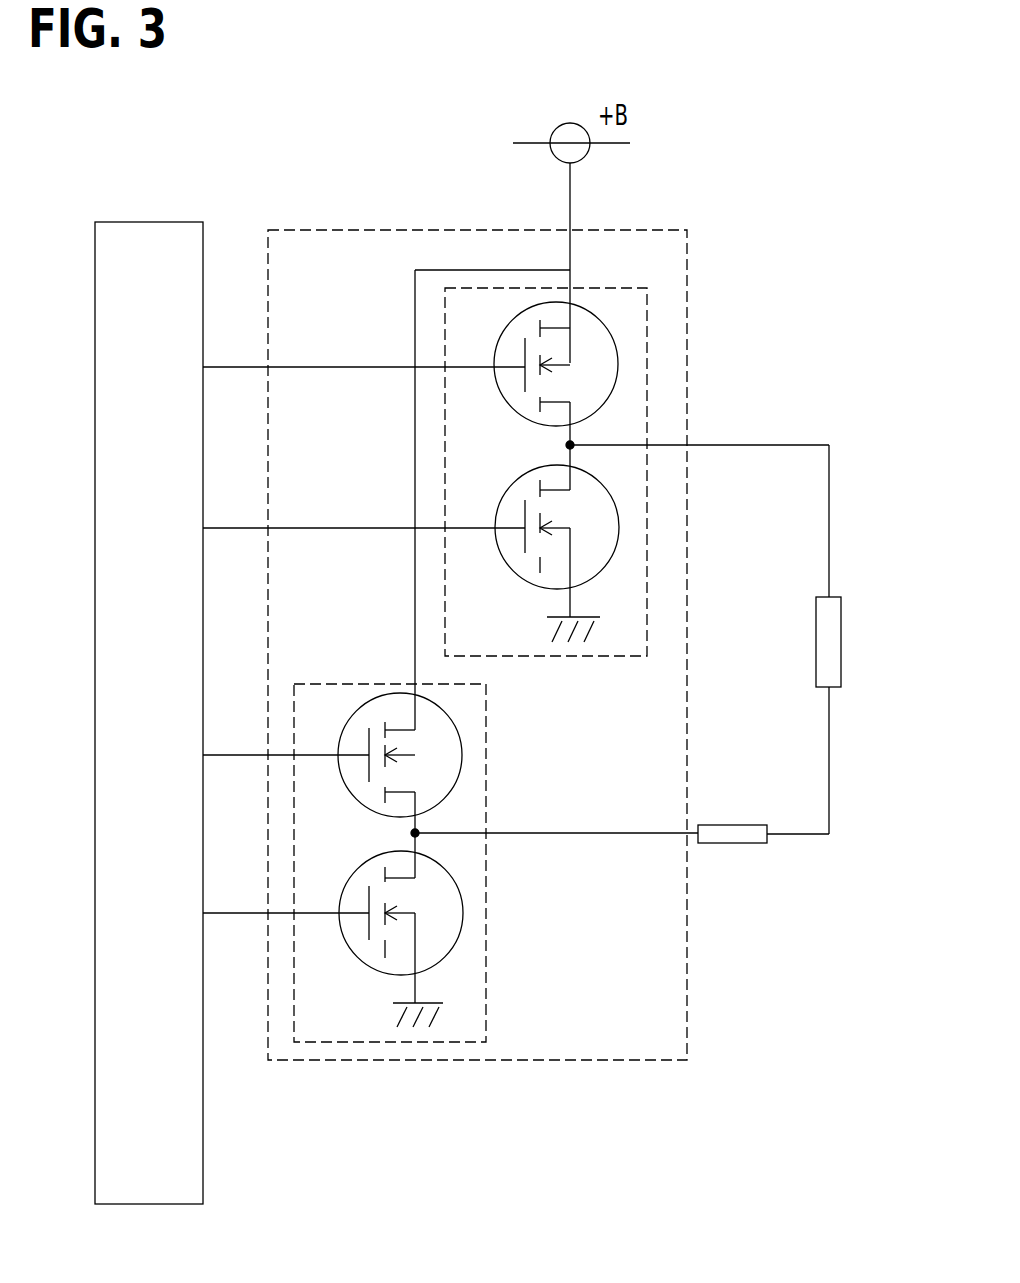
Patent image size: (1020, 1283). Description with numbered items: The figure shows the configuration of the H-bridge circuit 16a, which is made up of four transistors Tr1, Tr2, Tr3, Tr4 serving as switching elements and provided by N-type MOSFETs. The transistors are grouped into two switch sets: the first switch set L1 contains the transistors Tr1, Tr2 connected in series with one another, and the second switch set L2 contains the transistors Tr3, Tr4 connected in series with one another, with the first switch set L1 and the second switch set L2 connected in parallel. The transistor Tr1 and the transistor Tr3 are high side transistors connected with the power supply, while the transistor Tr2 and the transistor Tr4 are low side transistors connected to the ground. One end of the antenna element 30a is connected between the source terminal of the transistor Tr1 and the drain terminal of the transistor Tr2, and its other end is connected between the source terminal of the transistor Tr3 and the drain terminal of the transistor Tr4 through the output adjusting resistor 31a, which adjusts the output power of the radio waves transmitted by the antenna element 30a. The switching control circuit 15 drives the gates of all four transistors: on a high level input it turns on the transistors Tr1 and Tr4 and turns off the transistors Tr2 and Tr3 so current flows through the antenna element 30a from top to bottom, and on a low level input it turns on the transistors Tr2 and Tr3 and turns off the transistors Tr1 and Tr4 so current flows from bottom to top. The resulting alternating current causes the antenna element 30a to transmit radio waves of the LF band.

The switching control circuit 15 is at (188, 222).
The H-bridge circuit 16a is at (633, 228).
The transistor Tr1 is at (602, 318).
The transistor Tr2 is at (511, 482).
The transistor Tr3 is at (466, 729).
The transistor Tr4 is at (354, 864).
The first switch set L1 is at (647, 370).
The second switch set L2 is at (486, 810).
The antenna element 30a is at (842, 645).
The output adjusting resistor 31a is at (739, 825).